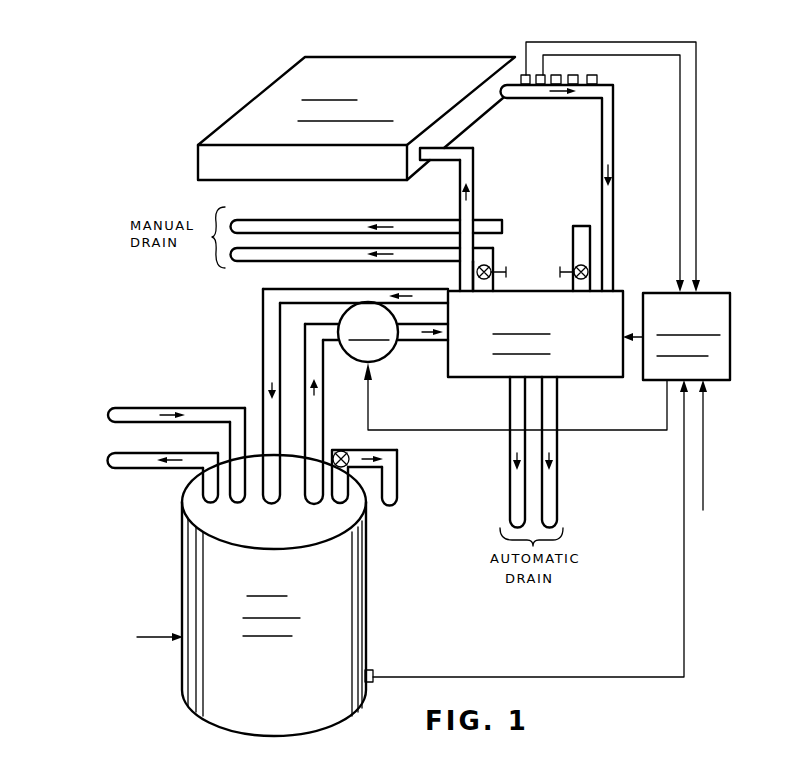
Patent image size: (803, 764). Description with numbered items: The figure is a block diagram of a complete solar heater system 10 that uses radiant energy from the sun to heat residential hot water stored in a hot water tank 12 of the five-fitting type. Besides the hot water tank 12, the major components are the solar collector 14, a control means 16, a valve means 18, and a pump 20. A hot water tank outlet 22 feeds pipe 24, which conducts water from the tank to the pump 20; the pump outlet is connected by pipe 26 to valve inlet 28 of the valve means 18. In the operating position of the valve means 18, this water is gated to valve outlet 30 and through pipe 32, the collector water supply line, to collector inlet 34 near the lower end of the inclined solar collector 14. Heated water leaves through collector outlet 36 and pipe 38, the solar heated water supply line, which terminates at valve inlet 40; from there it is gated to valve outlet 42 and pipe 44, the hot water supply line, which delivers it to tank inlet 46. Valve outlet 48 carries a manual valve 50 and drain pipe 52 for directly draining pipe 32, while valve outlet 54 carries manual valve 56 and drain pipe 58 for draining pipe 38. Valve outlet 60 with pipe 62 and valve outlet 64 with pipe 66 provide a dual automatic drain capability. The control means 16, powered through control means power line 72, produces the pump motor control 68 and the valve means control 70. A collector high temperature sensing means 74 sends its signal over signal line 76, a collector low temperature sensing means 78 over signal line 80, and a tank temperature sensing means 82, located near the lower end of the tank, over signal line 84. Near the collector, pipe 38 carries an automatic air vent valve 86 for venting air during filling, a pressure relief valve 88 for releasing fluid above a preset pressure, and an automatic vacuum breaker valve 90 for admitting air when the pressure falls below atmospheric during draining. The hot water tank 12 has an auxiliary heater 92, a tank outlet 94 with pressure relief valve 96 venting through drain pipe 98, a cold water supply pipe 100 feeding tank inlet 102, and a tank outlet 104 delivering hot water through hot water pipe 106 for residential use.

The solar heater system 10 is at (216, 118).
The hot water tank 12 is at (186, 580).
The solar collector 14 is at (415, 68).
The control means 16 is at (708, 294).
The valve means 18 is at (624, 296).
The pump 20 is at (378, 352).
The hot water tank outlet 22 is at (307, 500).
The pipe 24 is at (323, 406).
The pipe 26 is at (440, 341).
The valve inlet 28 is at (452, 358).
The valve outlet 30 is at (454, 298).
The pipe 32 is at (473, 179).
The collector inlet 34 is at (416, 163).
The collector outlet 36 is at (482, 117).
The pipe 38 is at (602, 152).
The valve inlet 40 is at (604, 294).
The valve outlet 42 is at (452, 330).
The pipe 44 is at (262, 333).
The tank inlet 46 is at (266, 500).
The valve outlet 48 is at (490, 296).
The manual valve 50 is at (494, 262).
The drain pipe 52 is at (270, 255).
The valve outlet 54 is at (578, 295).
The manual valve 56 is at (573, 265).
The drain pipe 58 is at (283, 218).
The valve outlet 60 is at (520, 376).
The pipe 62 is at (511, 410).
The valve outlet 64 is at (550, 378).
The pipe 66 is at (558, 420).
The pump motor control 68 is at (392, 430).
The valve means control 70 is at (638, 341).
The control means power line 72 is at (704, 446).
The collector high temperature sensing means 74 is at (524, 85).
The signal line 76 is at (697, 128).
The collector low temperature sensing means 78 is at (540, 85).
The signal line 80 is at (679, 128).
The tank temperature sensing means 82 is at (372, 670).
The signal line 84 is at (628, 677).
The automatic air vent valve 86 is at (551, 77).
The pressure relief valve 88 is at (574, 85).
The automatic vacuum breaker valve 90 is at (598, 79).
The auxiliary heater 92 is at (190, 638).
The tank outlet 94 is at (336, 495).
The pressure relief valve 96 is at (343, 440).
The drain pipe 98 is at (397, 496).
The cold water supply pipe 100 is at (136, 415).
The tank inlet 102 is at (238, 496).
The tank outlet 104 is at (216, 491).
The hot water pipe 106 is at (119, 460).